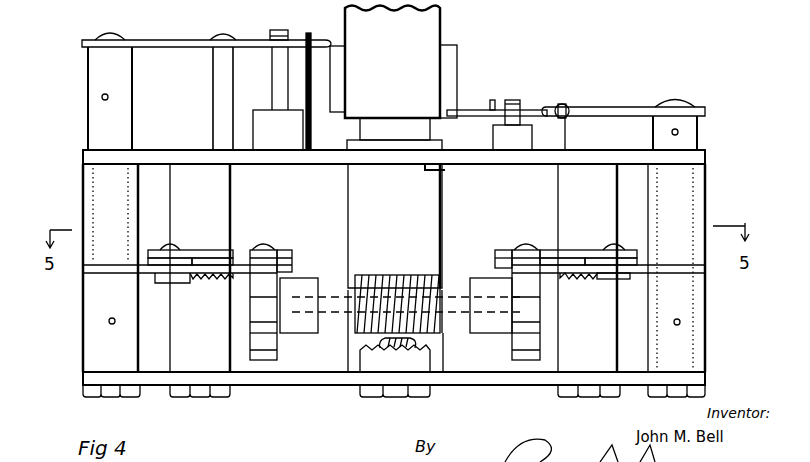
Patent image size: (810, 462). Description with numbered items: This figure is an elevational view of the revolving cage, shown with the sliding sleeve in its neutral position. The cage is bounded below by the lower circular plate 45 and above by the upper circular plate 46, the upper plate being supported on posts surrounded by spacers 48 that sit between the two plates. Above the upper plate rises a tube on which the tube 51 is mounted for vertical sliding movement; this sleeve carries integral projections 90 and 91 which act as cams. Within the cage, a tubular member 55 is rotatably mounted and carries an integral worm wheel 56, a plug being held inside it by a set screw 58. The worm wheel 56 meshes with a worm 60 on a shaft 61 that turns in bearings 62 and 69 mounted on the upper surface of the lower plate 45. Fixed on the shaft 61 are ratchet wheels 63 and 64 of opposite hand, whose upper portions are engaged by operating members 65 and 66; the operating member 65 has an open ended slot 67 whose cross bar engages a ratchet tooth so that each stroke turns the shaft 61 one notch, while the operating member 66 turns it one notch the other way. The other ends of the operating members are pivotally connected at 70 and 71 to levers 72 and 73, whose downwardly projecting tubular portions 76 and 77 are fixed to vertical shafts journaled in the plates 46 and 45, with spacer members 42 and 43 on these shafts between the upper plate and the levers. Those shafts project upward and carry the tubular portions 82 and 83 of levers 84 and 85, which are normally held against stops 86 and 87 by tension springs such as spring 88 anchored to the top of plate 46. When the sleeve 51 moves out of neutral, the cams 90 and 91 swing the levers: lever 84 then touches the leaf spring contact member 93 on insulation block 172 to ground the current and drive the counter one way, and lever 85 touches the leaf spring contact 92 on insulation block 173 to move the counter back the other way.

The spacer member 42 is at (670, 268).
The spacer member 43 is at (116, 268).
The lower circular plate 45 is at (452, 386).
The upper circular plate 46 is at (525, 158).
The spacers 48 is at (232, 216).
The tube 51 is at (443, 24).
The tubular member 55 is at (443, 348).
The worm wheel 56 is at (318, 284).
The set screw 58 is at (440, 166).
The worm 60 is at (400, 280).
The shaft 61 is at (452, 286).
The bearing 62 is at (208, 268).
The ratchet wheel 63 is at (278, 354).
The ratchet wheel 64 is at (516, 342).
The operating member 65 is at (228, 257).
The operating member 66 is at (541, 253).
The open ended slot 67 is at (292, 262).
The bearing 69 is at (575, 268).
The pivotal connection 70 is at (277, 254).
The pivotal connection 71 is at (512, 252).
The lever 72 is at (152, 278).
The lever 73 is at (636, 258).
The tubular portion 76 is at (110, 335).
The tubular portion 77 is at (677, 308).
The tubular portion 82 is at (88, 108).
The tubular portion 83 is at (700, 132).
The lever 84 is at (624, 106).
The lever 85 is at (160, 40).
The stop 86 is at (492, 100).
The stop 87 is at (311, 33).
The tension spring 88 is at (568, 118).
The projection 90 is at (457, 92).
The projection 91 is at (337, 114).
The leaf spring contact 92 is at (279, 30).
The leaf spring contact member 93 is at (515, 100).
The insulation block 172 is at (493, 138).
The insulation block 173 is at (253, 117).